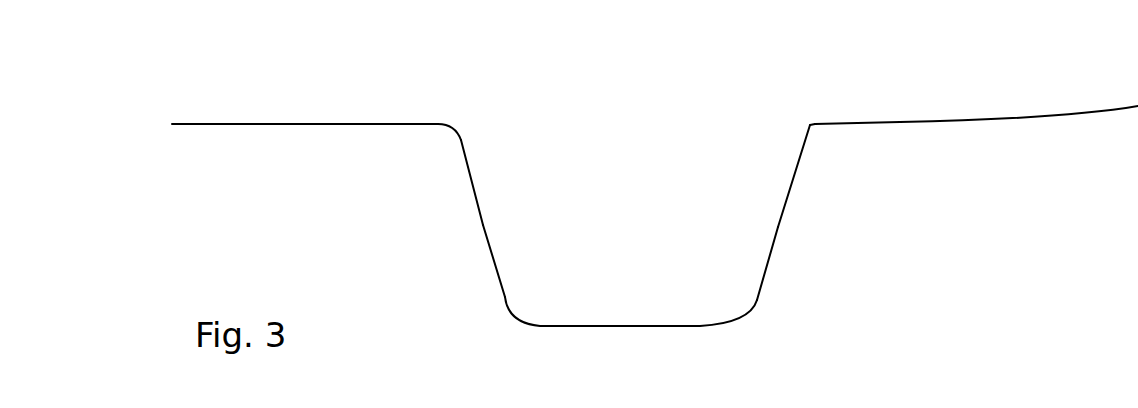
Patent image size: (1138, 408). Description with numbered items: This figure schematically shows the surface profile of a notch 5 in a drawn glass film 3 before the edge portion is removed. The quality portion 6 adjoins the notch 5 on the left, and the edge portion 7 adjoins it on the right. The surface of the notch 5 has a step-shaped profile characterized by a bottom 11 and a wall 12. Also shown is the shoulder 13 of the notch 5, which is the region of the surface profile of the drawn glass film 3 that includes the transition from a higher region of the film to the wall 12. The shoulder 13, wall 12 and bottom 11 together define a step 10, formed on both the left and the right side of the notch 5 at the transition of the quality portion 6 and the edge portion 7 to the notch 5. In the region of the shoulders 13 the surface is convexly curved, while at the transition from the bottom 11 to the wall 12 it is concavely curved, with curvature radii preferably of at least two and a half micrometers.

The drawn glass film 3 is at (418, 84).
The notch 5 is at (636, 125).
The quality portion 6 is at (246, 124).
The edge portion 7 is at (907, 123).
The step 10 is at (495, 133).
The bottom 11 is at (633, 326).
The wall 12 is at (483, 225).
The shoulder 13 is at (447, 132).